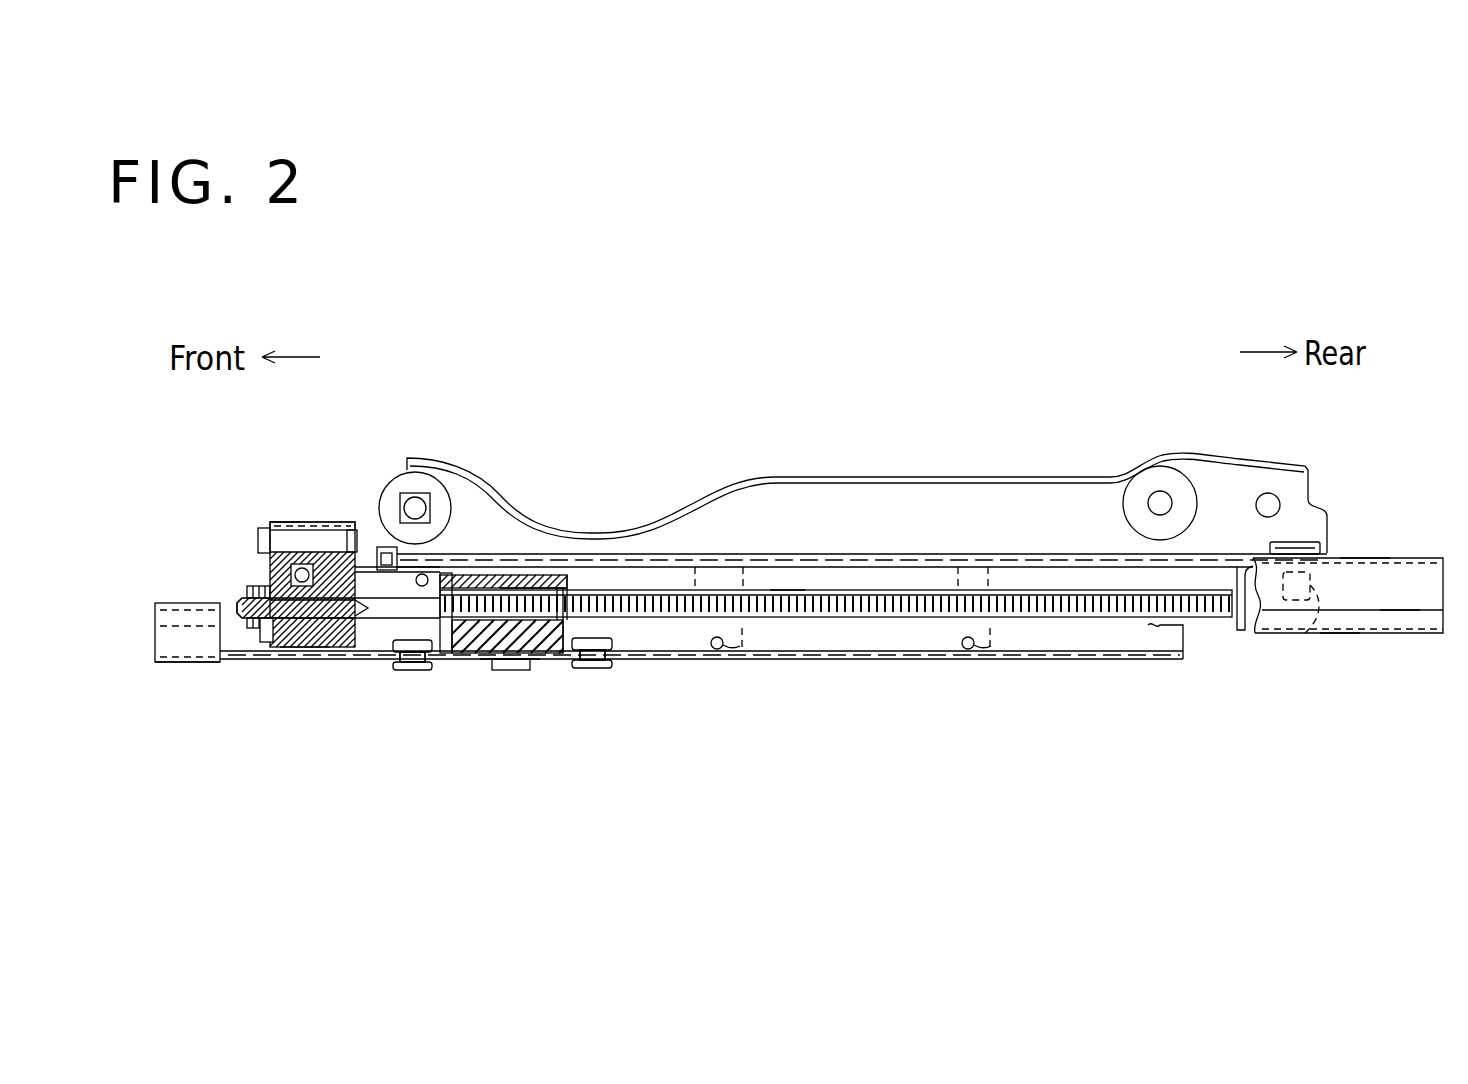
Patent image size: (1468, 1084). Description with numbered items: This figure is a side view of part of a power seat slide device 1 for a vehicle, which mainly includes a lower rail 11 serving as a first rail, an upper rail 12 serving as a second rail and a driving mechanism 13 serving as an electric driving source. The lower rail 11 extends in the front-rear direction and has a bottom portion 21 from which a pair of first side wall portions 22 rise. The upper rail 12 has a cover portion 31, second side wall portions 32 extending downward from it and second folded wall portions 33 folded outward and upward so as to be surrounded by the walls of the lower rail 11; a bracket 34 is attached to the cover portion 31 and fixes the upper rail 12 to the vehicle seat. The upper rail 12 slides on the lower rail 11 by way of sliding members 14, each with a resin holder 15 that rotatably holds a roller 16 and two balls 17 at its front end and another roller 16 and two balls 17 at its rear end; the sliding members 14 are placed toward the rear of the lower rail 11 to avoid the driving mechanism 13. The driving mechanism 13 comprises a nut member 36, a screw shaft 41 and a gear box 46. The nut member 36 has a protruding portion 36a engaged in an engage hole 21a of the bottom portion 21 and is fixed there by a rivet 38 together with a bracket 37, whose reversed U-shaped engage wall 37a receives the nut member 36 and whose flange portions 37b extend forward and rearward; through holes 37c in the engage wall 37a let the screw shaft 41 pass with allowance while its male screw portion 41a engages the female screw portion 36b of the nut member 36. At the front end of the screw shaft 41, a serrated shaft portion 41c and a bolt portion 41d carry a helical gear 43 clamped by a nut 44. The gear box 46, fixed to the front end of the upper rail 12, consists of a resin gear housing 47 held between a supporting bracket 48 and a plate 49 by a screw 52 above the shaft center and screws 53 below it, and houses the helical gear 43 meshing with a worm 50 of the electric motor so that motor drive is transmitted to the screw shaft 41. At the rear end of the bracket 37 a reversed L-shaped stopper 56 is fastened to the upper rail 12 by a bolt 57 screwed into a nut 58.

The power seat slide device 1 is at (802, 416).
The lower rail 11 is at (157, 638).
The upper rail 12 is at (1398, 570).
The driving mechanism 13 is at (171, 483).
The sliding member 14 is at (882, 592).
The holder 15 is at (1010, 633).
The roller 16 is at (998, 712).
The ball 17 is at (992, 553).
The bottom portion 21 is at (236, 662).
The engage hole 21a is at (500, 670).
The first side wall portion 22 is at (180, 648).
The cover portion 31 is at (1358, 558).
The second side wall portion 32 is at (1393, 598).
The second folded wall portion 33 is at (1336, 625).
The bracket 34 is at (1087, 481).
The nut member 36 is at (467, 653).
The protruding portion 36a is at (520, 672).
The screw portion (female screw) 36b is at (527, 588).
The bracket 37 is at (488, 573).
The engage wall 37a is at (567, 578).
The flange portion 37b is at (612, 660).
The through hole 37c is at (585, 612).
The rivet 38 is at (590, 670).
The screw shaft 41 is at (906, 592).
The screw portion (male screw) 41a is at (784, 592).
The serrated shaft portion 41c is at (290, 647).
The bolt portion 41d is at (238, 605).
The helical gear (worm wheel) 43 is at (265, 552).
The nut 44 is at (255, 591).
The gear box 46 is at (298, 463).
The gear housing 47 is at (292, 648).
The supporting bracket 48 is at (386, 547).
The plate 49 is at (285, 522).
The worm 50 is at (352, 530).
The screw 52 is at (296, 530).
The screw 53 is at (267, 643).
The stopper 56 is at (1240, 632).
The bolt 57 is at (1300, 542).
The nut 58 is at (1310, 633).